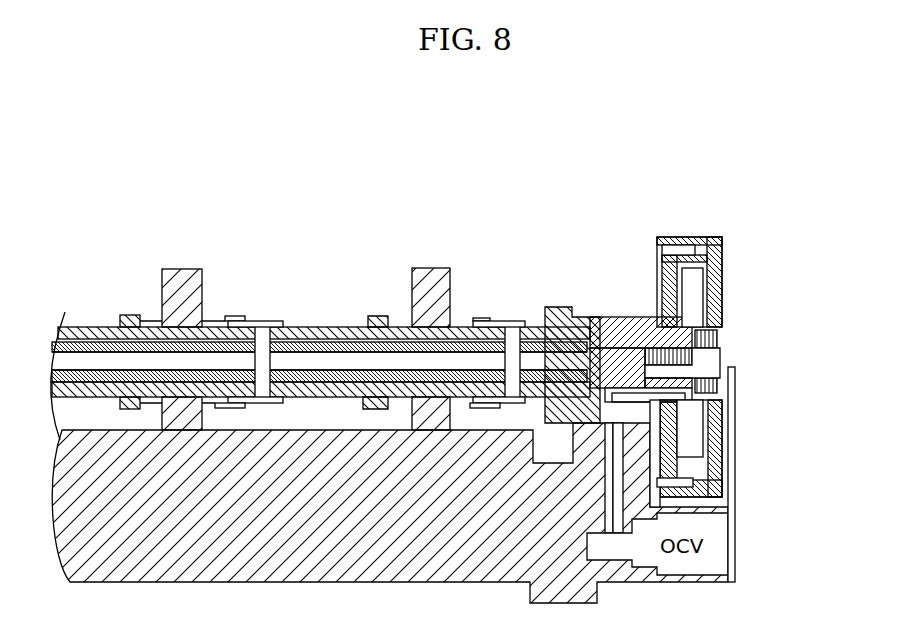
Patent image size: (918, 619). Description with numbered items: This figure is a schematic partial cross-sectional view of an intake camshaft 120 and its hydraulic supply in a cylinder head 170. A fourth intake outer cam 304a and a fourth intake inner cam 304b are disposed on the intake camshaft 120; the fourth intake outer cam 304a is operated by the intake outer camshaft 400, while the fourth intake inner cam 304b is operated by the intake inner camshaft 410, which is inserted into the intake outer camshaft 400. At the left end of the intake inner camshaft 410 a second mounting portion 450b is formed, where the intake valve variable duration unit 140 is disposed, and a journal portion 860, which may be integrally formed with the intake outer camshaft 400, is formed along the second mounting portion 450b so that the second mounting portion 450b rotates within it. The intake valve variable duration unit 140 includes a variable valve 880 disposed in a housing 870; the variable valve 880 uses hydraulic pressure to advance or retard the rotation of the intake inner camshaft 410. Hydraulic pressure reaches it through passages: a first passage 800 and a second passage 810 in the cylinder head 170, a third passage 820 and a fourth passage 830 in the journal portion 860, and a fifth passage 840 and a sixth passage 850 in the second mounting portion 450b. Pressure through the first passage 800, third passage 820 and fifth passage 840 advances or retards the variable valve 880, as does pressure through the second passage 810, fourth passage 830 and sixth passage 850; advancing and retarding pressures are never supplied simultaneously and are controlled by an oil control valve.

The intake camshaft 120 is at (359, 318).
The intake outer camshaft 400 is at (303, 322).
The intake inner camshaft 410 is at (240, 316).
The fourth intake outer cam 304a is at (373, 316).
The fourth intake inner cam 304b is at (482, 318).
The second mounting portion 450b is at (618, 325).
The journal portion 860 is at (578, 307).
The intake valve variable duration unit 140 is at (736, 246).
The housing 870 is at (722, 300).
The sixth passage 850 is at (700, 355).
The fifth passage 840 is at (712, 375).
The third passage 820 is at (660, 383).
The fourth passage 830 is at (688, 432).
The variable valve 880 is at (708, 450).
The first passage 800 is at (660, 483).
The second passage 810 is at (612, 505).
The cylinder head 170 is at (293, 521).